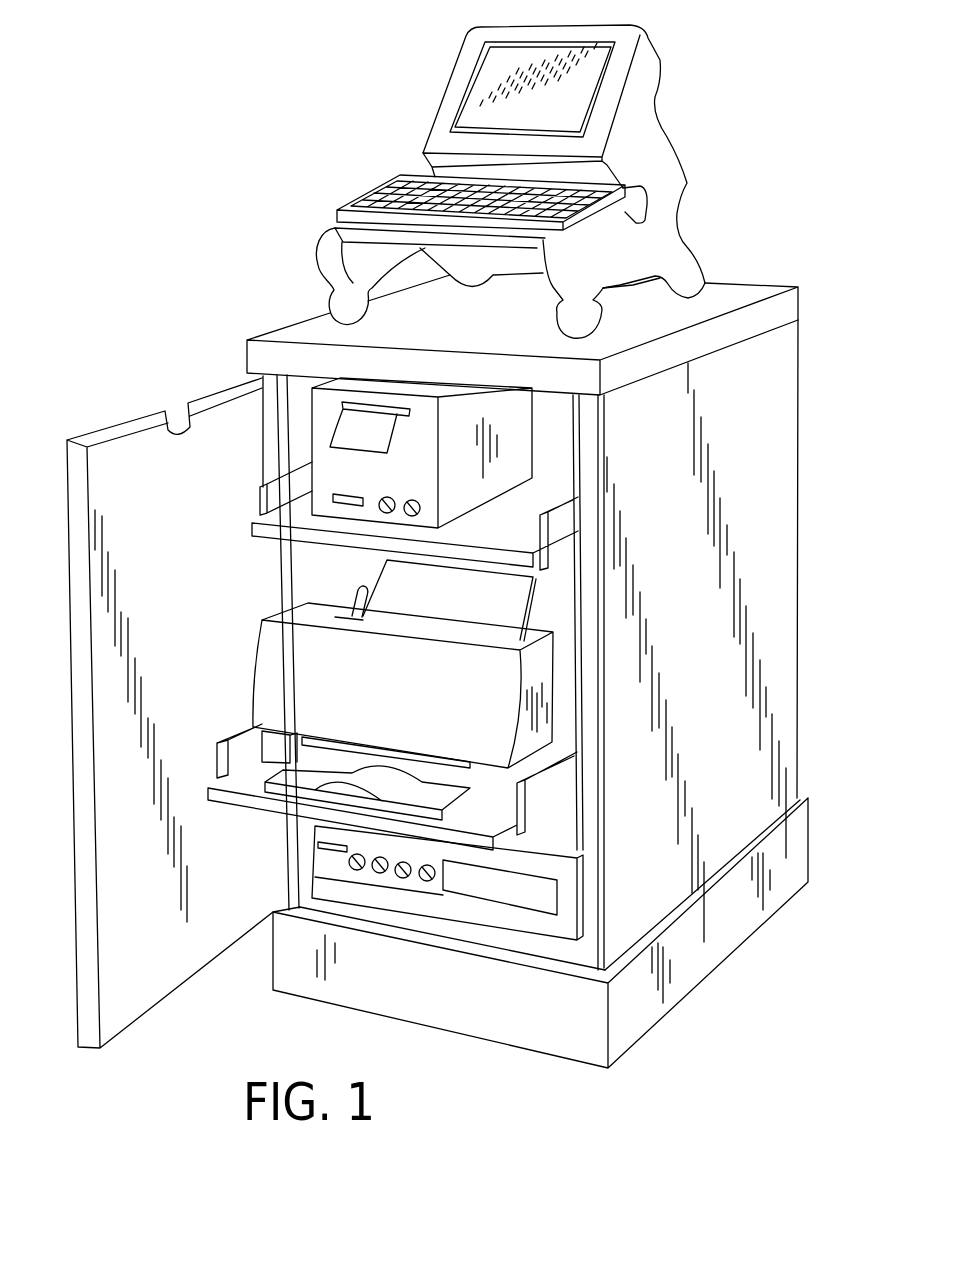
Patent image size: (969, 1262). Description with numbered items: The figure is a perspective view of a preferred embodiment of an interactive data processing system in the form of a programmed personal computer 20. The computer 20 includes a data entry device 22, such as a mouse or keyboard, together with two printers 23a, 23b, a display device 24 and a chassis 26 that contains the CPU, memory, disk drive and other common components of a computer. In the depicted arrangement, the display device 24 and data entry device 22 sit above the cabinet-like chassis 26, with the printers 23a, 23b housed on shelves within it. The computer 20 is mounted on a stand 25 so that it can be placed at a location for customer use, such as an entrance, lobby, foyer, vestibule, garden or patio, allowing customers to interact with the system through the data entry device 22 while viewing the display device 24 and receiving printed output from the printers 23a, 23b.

The programmed personal computer 20 is at (332, 112).
The data entry device 22 is at (385, 195).
The printer 23a is at (410, 707).
The printer 23b is at (413, 491).
The display device 24 is at (450, 75).
The stand 25 is at (687, 250).
The chassis 26 is at (433, 887).